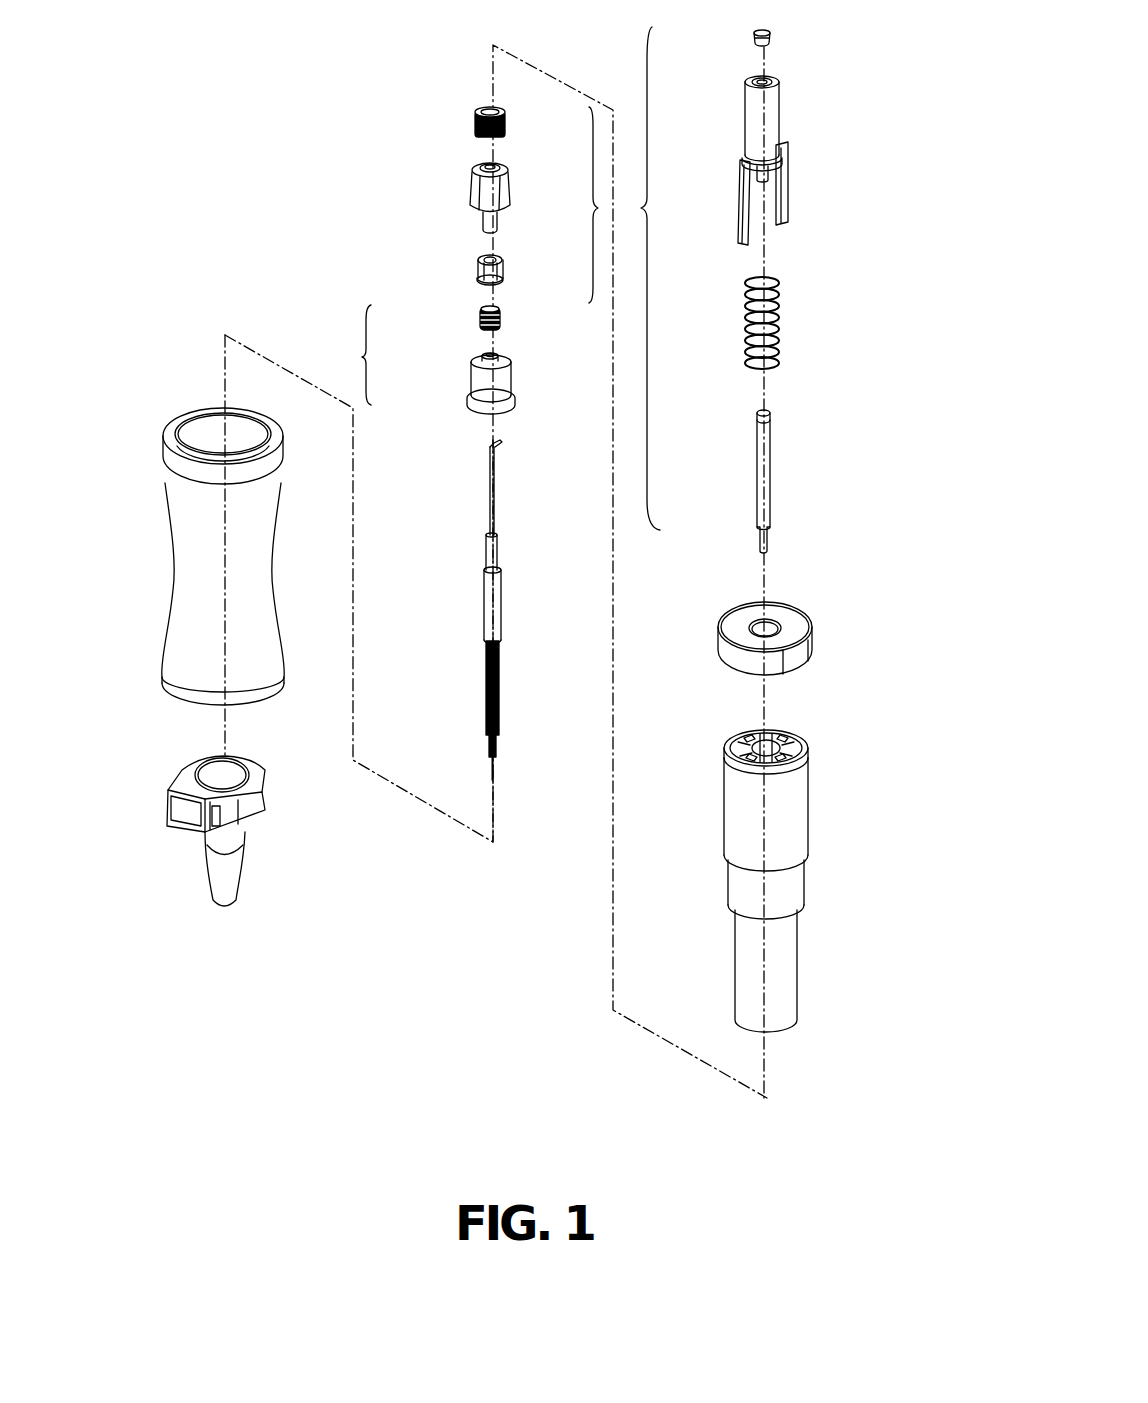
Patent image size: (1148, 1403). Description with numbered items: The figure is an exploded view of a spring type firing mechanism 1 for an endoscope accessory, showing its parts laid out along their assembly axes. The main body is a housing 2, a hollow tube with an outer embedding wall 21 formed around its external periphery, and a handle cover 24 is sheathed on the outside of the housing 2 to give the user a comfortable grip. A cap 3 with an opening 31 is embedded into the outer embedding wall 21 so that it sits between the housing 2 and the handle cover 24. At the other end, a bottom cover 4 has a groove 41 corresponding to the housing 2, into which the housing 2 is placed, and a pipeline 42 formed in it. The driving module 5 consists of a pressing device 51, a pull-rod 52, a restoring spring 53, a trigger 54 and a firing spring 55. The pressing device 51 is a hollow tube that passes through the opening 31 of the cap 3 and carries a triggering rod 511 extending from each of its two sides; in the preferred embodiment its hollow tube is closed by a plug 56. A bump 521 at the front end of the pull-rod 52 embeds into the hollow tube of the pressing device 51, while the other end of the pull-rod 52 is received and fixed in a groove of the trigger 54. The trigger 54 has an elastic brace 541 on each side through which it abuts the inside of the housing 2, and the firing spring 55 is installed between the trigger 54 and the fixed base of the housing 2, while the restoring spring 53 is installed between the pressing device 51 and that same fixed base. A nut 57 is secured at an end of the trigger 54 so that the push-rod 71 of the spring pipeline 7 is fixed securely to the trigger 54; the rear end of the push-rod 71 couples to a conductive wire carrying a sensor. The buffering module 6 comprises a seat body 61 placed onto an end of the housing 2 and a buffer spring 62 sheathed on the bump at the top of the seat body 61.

The firing mechanism 1 is at (138, 41).
The housing 2 is at (797, 835).
The outer embedding wall 21 is at (808, 772).
The handle cover 24 is at (185, 578).
The cap 3 is at (800, 625).
The opening 31 is at (770, 622).
The bottom cover 4 is at (215, 846).
The groove 41 is at (238, 775).
The pipeline 42 is at (235, 900).
The driving module 5 is at (627, 285).
The pressing device 51 is at (772, 118).
The triggering rod 511 is at (780, 200).
The pull-rod 52 is at (770, 475).
The bump 521 is at (757, 422).
The restoring spring 53 is at (782, 318).
The trigger 54 is at (505, 200).
The elastic brace 541 is at (470, 195).
The firing spring 55 is at (475, 130).
The plug 56 is at (770, 35).
The nut 57 is at (478, 270).
The buffering module 6 is at (427, 359).
The seat body 61 is at (483, 388).
The buffer spring 62 is at (480, 325).
The spring pipeline 7 is at (505, 648).
The push-rod 71 is at (494, 493).